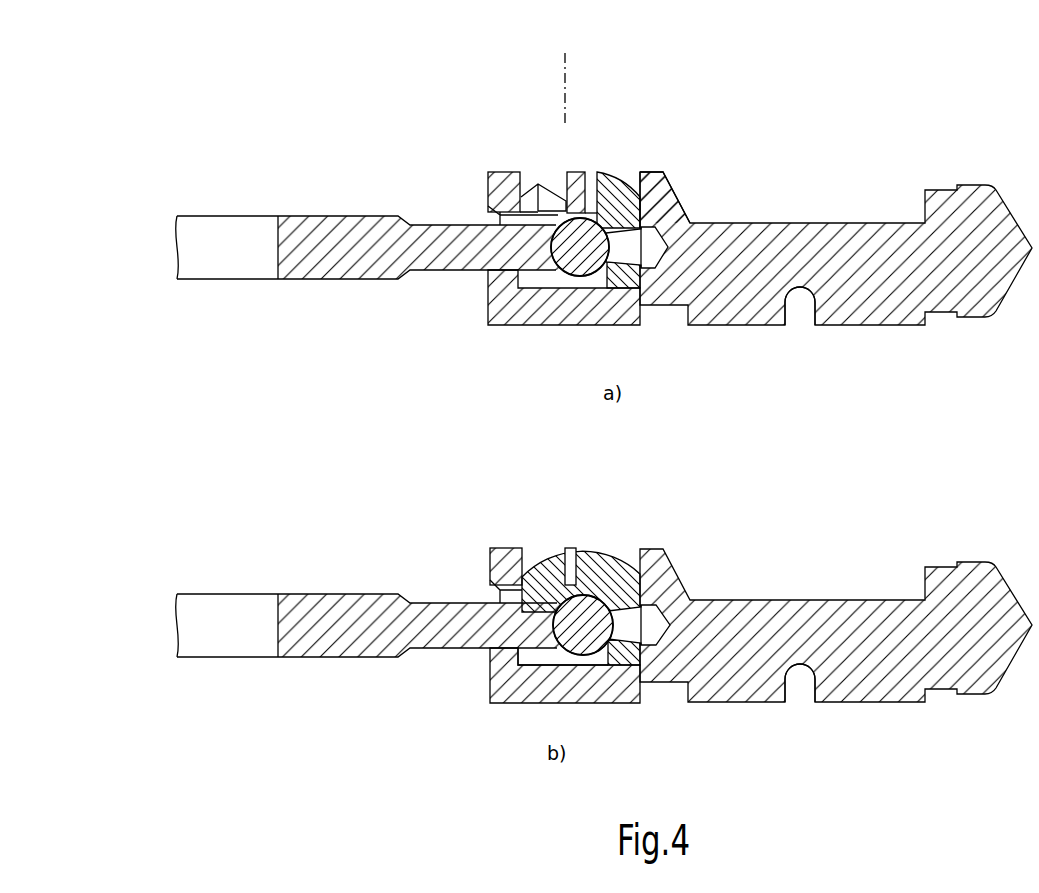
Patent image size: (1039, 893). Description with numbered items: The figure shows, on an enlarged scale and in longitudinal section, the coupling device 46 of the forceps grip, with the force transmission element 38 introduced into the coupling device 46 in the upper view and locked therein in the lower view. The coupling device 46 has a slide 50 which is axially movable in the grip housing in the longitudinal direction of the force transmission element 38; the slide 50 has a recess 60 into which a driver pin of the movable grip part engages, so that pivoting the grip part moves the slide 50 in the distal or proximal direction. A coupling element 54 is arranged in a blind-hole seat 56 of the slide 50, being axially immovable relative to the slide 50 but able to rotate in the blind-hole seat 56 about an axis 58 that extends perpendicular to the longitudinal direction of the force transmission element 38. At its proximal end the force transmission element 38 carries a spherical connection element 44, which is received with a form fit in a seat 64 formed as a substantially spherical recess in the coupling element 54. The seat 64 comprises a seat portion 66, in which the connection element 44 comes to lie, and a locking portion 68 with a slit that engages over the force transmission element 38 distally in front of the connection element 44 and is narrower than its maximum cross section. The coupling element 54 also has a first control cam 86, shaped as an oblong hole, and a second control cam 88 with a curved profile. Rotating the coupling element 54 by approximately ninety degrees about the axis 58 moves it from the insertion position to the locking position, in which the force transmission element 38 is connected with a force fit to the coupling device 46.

The force transmission element 38 is at (350, 280).
The connection element 44 is at (542, 290).
The coupling device 46 is at (836, 410).
The slide 50 is at (762, 236).
The coupling element 54 is at (618, 187).
The blind-hole seat 56 is at (638, 175).
The rotation axis 58 is at (563, 64).
The recess 60 is at (803, 330).
The seat 64 is at (553, 210).
The seat portion 66 is at (597, 664).
The locking portion 68 is at (533, 668).
The first control cam 86 is at (565, 172).
The second control cam 88 is at (594, 172).